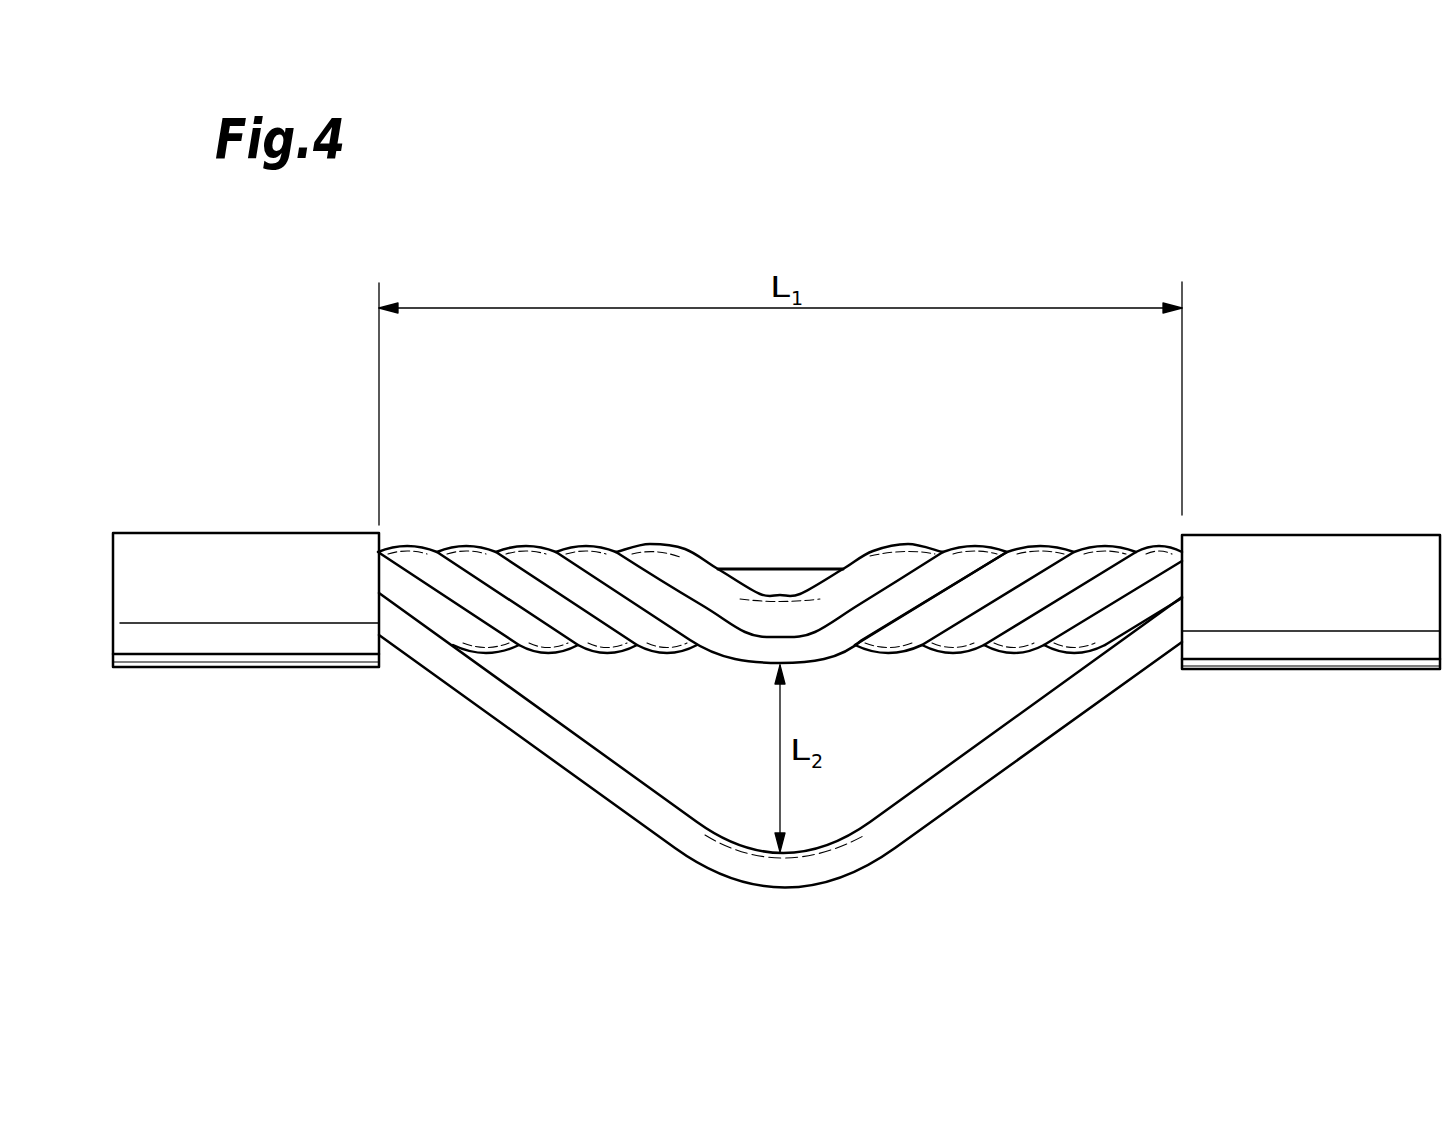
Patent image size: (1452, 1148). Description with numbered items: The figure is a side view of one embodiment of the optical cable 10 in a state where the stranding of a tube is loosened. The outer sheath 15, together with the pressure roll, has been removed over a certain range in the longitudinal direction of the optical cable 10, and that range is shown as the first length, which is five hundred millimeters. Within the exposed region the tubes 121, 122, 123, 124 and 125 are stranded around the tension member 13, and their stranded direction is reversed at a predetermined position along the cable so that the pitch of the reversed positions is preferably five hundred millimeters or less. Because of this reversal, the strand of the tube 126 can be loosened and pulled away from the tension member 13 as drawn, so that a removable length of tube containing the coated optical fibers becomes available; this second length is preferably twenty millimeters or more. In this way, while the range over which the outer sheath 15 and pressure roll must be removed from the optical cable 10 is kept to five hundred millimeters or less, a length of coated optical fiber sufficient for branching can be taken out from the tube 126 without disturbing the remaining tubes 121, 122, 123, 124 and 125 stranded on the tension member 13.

The optical cable 10 is at (1222, 357).
The tube 121 is at (410, 547).
The tube 122 is at (478, 547).
The tube 123 is at (548, 547).
The tube 124 is at (615, 547).
The tube 125 is at (683, 547).
The tube 126 is at (958, 806).
The tension member 13 is at (788, 566).
The outer sheath 15 is at (258, 532).